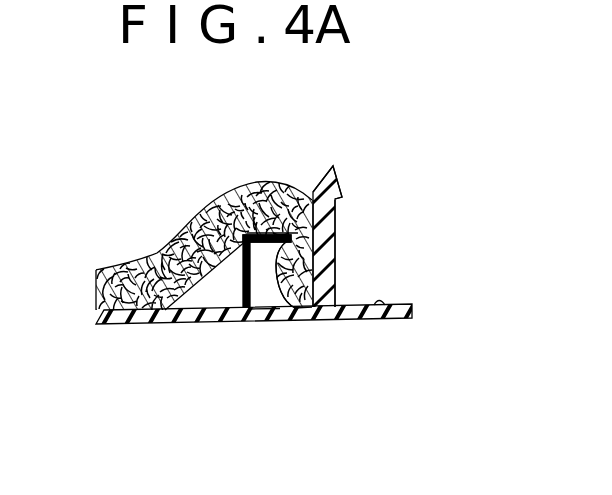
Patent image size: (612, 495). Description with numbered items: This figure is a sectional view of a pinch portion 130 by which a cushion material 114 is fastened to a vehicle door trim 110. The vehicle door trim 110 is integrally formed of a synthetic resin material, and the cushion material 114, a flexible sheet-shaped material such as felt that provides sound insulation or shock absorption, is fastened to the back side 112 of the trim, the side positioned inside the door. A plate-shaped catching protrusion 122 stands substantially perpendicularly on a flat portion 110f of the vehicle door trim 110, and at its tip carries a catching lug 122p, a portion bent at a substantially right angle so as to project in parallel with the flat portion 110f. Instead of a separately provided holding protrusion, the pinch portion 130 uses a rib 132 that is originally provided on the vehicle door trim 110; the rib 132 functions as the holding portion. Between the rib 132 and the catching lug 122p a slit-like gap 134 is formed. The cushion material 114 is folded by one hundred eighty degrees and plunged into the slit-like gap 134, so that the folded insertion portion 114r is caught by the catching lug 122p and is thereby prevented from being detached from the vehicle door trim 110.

The vehicle door trim 110 is at (165, 358).
The flat portion 110f is at (265, 318).
The back side 112 is at (383, 310).
The cushion material 114 is at (160, 232).
The insertion portion 114r is at (292, 310).
The catching protrusion 122 is at (243, 265).
The catching lug 122p is at (283, 202).
The pinch portion 130 is at (377, 222).
The rib 132 is at (330, 278).
The slit-like gap 134 is at (307, 278).